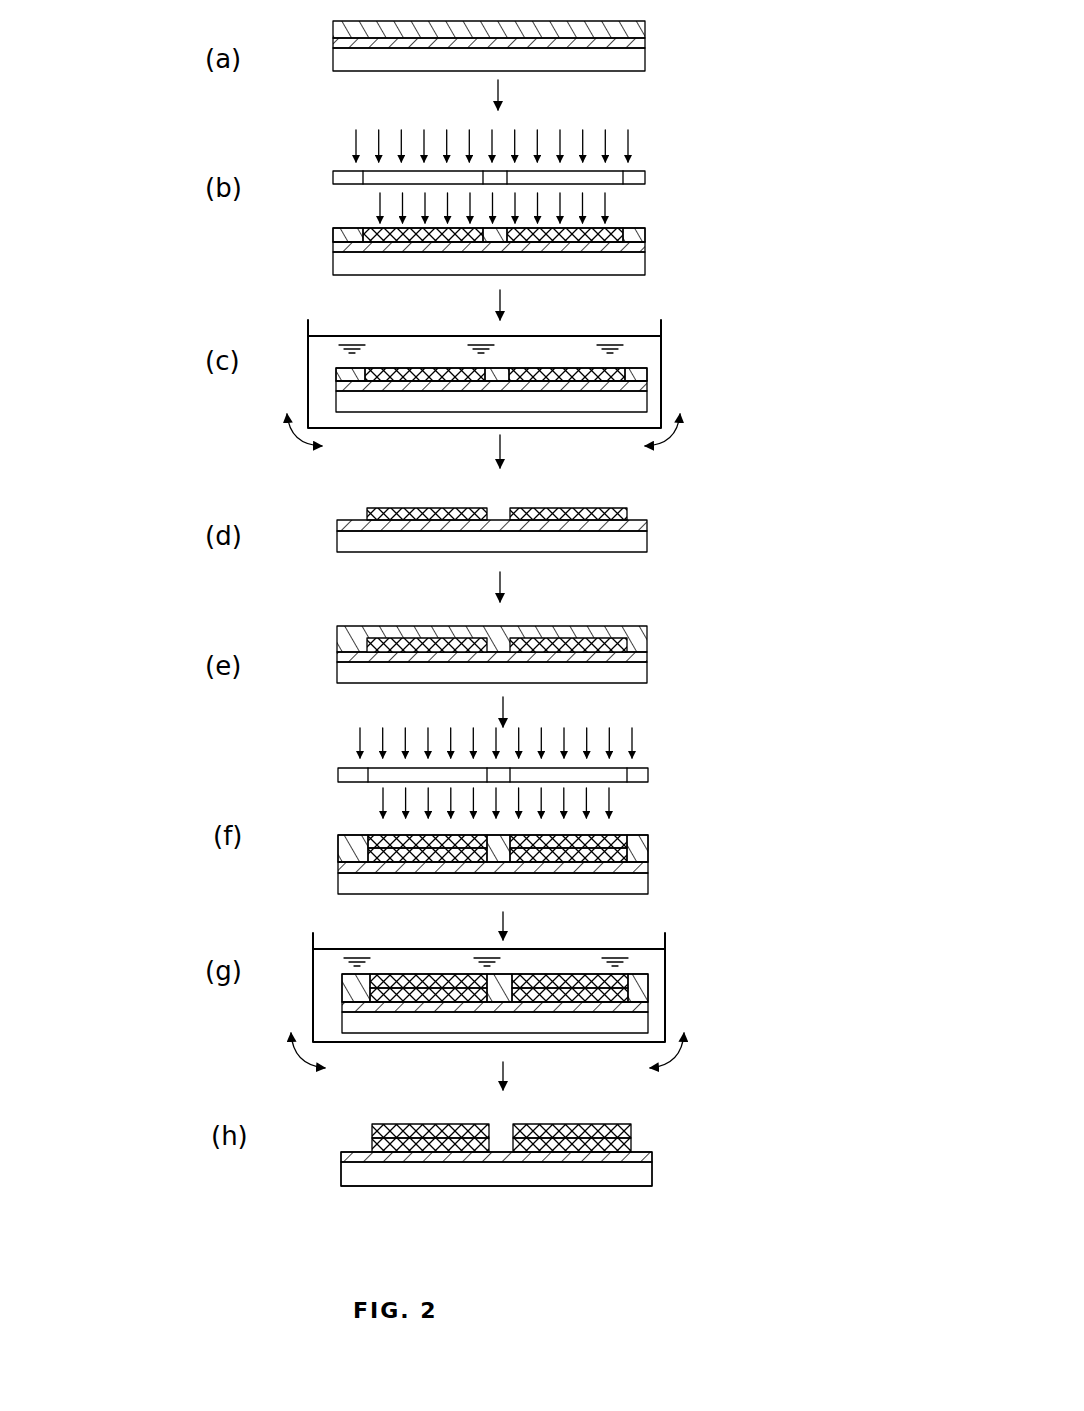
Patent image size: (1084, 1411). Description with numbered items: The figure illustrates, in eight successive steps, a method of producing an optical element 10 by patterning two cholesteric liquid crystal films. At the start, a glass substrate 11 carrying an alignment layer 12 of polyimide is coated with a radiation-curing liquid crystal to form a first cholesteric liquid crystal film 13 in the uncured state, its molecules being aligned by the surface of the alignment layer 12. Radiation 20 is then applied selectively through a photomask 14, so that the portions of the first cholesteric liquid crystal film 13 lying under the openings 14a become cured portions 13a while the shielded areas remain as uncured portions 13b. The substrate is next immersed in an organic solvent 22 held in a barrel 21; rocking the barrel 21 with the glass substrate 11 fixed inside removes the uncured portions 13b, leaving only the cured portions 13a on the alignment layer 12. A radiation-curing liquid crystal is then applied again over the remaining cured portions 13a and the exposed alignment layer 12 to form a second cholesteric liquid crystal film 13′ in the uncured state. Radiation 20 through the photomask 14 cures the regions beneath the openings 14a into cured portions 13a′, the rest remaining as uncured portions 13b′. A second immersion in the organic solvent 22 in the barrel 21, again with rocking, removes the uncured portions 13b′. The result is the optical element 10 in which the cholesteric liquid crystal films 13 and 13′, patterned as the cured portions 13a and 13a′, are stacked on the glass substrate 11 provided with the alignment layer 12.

The optical element 10 is at (664, 1130).
The glass substrate 11 is at (645, 64).
The alignment layer 12 is at (645, 43).
The first cholesteric liquid crystal film 13 is at (645, 25).
The cured portions 13a is at (372, 229).
The uncured portions 13b is at (345, 229).
The second cholesteric liquid crystal film 13′ is at (501, 1131).
The cured portions 13a′ is at (385, 836).
The uncured portions 13b′ is at (346, 836).
The photomask 14 is at (645, 172).
The openings 14a is at (362, 172).
The radiation 20 is at (628, 141).
The barrel 21 is at (661, 323).
The organic solvent 22 is at (648, 337).